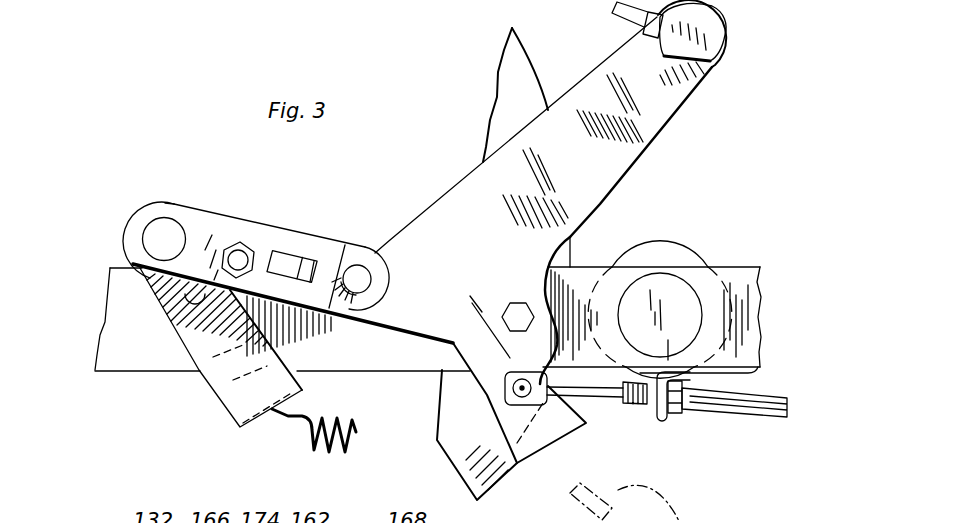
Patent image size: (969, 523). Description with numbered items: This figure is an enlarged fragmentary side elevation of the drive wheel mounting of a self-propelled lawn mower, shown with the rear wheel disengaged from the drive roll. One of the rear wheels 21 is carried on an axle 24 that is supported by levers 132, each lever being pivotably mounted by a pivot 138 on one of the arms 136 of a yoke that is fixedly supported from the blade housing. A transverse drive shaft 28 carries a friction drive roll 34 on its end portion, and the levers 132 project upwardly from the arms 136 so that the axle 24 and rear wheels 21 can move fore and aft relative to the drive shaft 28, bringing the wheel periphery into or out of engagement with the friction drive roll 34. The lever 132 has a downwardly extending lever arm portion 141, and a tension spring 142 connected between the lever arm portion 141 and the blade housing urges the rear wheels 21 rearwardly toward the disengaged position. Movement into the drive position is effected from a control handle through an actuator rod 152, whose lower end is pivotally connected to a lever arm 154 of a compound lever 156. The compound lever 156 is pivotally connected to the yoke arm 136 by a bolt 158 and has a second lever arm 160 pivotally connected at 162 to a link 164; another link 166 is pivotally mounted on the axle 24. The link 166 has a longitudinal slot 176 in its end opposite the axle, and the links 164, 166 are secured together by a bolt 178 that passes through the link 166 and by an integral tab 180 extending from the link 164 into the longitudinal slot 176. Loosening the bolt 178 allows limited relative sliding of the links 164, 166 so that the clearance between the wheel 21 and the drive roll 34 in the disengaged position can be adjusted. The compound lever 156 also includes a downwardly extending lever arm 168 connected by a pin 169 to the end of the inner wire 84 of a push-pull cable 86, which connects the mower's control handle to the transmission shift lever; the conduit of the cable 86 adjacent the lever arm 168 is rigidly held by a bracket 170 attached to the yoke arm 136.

The rear wheels 21 is at (512, 53).
The axle 24 is at (155, 230).
The transverse drive shaft 28 is at (687, 310).
The friction drive roll 34 is at (680, 241).
The inner wire 84 is at (578, 390).
The push-pull cable 86 is at (783, 398).
The levers 132 is at (130, 284).
The yoke arms 136 is at (117, 309).
The pivot 138 is at (183, 297).
The lever arm portion 141 is at (213, 344).
The tension spring 142 is at (358, 398).
The actuator rod 152 is at (633, 22).
The lever arm 154 is at (623, 132).
The compound lever 156 is at (453, 200).
The bolt 158 is at (527, 283).
The lever arm 160 is at (393, 316).
The pivotal connection 162 is at (373, 250).
The link 164 is at (373, 289).
The link 166 is at (199, 222).
The lever arm 168 is at (562, 426).
The pin 169 is at (518, 390).
The bracket 170 is at (745, 373).
The longitudinal slot 176 is at (283, 258).
The bolt 178 is at (242, 252).
The integral tab 180 is at (308, 262).